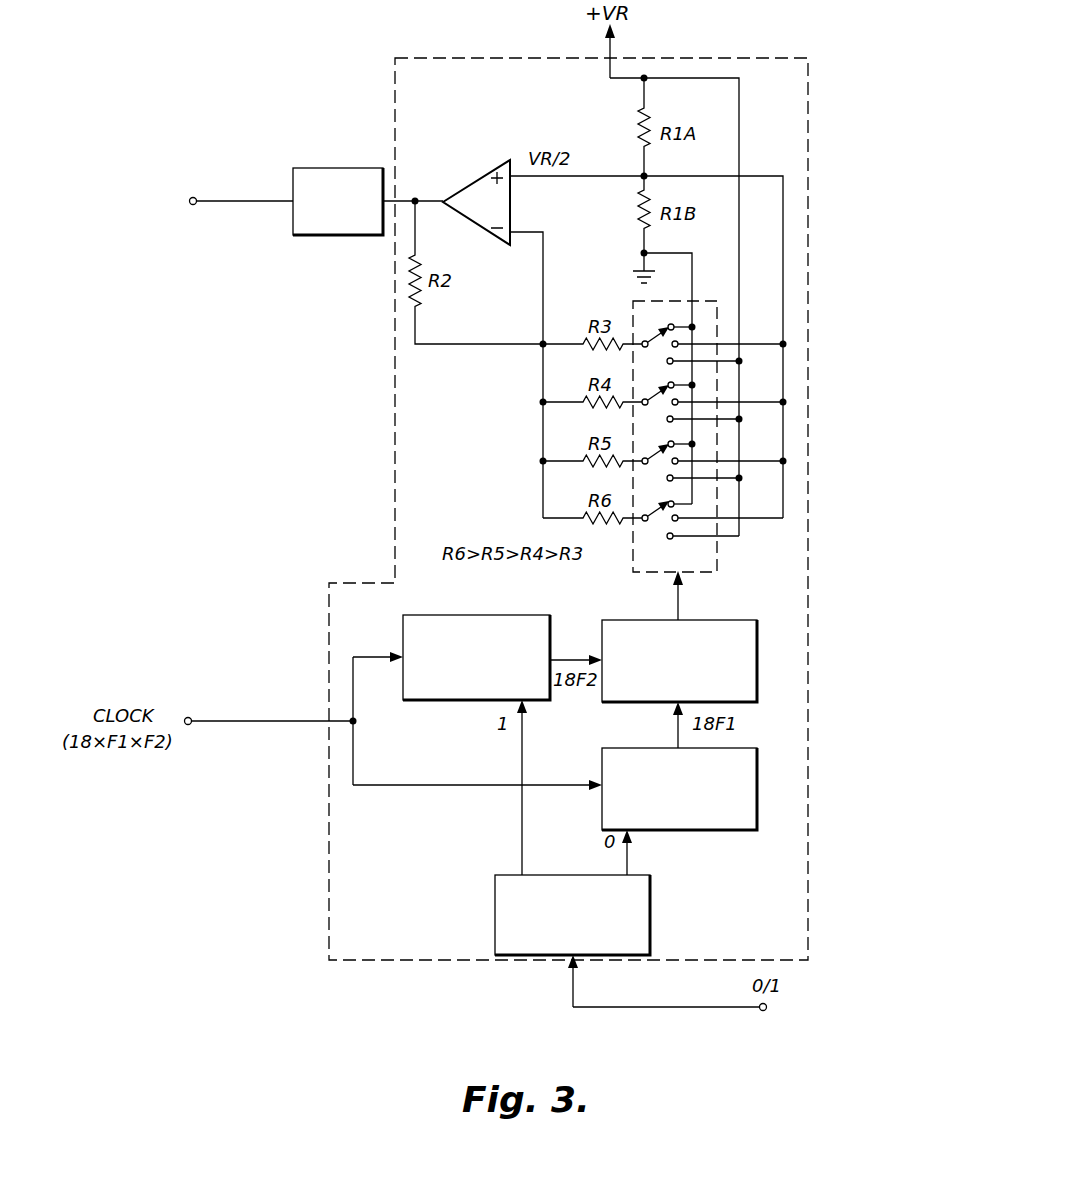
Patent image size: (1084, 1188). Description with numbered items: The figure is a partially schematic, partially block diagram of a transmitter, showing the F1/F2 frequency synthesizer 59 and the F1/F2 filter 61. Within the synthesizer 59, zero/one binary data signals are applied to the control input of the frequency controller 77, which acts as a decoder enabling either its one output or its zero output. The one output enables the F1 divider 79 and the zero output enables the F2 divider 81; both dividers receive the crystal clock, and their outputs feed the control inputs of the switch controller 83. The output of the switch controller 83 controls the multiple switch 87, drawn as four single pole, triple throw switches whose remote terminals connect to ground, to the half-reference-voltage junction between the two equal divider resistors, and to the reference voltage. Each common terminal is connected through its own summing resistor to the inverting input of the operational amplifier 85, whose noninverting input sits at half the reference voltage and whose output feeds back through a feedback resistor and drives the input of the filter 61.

The F1/F2 frequency synthesizer 59 is at (808, 104).
The F1/F2 filter 61 is at (345, 168).
The frequency controller 77 is at (650, 940).
The F1 divider 79 is at (417, 700).
The F2 divider 81 is at (740, 830).
The switch controller 83 is at (744, 620).
The operational amplifier 85 is at (510, 207).
The multiple switch 87 is at (636, 300).